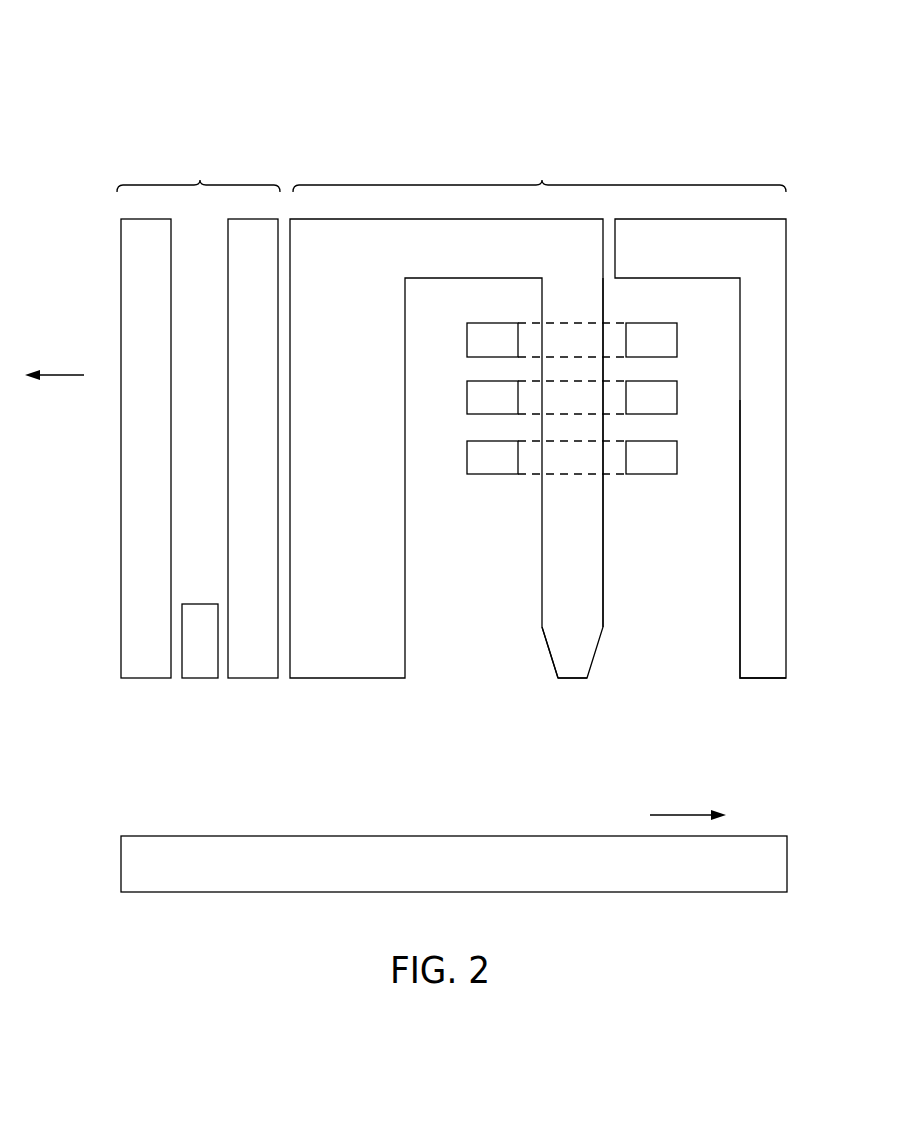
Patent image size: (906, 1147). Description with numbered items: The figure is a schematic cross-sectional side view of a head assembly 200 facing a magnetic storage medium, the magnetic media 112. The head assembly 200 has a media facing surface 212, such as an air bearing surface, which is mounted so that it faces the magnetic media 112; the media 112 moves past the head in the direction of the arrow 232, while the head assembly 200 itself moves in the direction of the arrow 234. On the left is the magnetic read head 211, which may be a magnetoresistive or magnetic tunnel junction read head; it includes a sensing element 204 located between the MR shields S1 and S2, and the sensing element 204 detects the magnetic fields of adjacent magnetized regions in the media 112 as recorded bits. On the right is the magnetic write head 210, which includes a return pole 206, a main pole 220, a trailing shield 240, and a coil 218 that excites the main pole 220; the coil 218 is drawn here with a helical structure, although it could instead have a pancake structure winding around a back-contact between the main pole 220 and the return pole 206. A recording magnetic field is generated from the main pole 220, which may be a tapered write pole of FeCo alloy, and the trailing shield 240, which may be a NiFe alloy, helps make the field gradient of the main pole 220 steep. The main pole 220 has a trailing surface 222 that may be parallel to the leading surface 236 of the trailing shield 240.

The head assembly 200 is at (138, 64).
The magnetic read head 211 is at (198, 170).
The magnetic write head 210 is at (539, 170).
The MR shield S1 is at (147, 680).
The sensing element 204 is at (201, 680).
The MR shield S2 is at (261, 680).
The return pole 206 is at (353, 680).
The trailing surface 222 is at (604, 603).
The main pole 220 is at (548, 645).
The media facing surface 212 is at (572, 680).
The coil 218 is at (490, 476).
The leading surface 236 is at (738, 545).
The trailing shield 240 is at (762, 680).
The arrow 234 is at (66, 373).
The arrow 232 is at (680, 813).
The magnetic media 112 is at (715, 893).